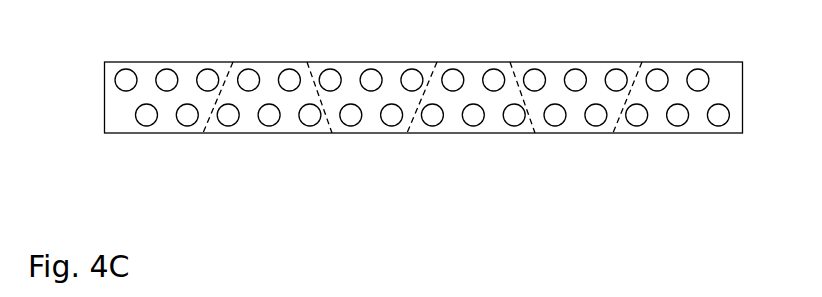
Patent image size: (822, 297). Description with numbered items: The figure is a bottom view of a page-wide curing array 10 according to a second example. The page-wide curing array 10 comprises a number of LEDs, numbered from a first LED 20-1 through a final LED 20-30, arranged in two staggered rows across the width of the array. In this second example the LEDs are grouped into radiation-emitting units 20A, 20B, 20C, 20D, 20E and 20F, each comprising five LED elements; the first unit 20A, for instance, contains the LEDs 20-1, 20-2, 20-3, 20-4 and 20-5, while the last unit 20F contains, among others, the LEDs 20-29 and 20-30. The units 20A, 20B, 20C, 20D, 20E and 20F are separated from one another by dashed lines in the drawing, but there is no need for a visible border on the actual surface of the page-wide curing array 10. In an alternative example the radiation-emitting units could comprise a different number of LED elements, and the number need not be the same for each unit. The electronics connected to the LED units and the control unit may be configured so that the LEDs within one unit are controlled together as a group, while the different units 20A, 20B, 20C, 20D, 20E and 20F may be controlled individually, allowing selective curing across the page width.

The page-wide curing array 10 is at (745, 97).
The radiation-emitting unit 20A is at (135, 111).
The radiation-emitting unit 20B is at (292, 118).
The radiation-emitting unit 20C is at (353, 72).
The radiation-emitting unit 20D is at (452, 117).
The radiation-emitting unit 20E is at (555, 77).
The radiation-emitting unit 20F is at (680, 99).
The LED 20-1 is at (126, 80).
The LED 20-2 is at (146, 117).
The LED 20-3 is at (168, 81).
The LED 20-4 is at (187, 117).
The LED 20-5 is at (208, 81).
The LED 20-29 is at (697, 82).
The LED 20-30 is at (718, 117).